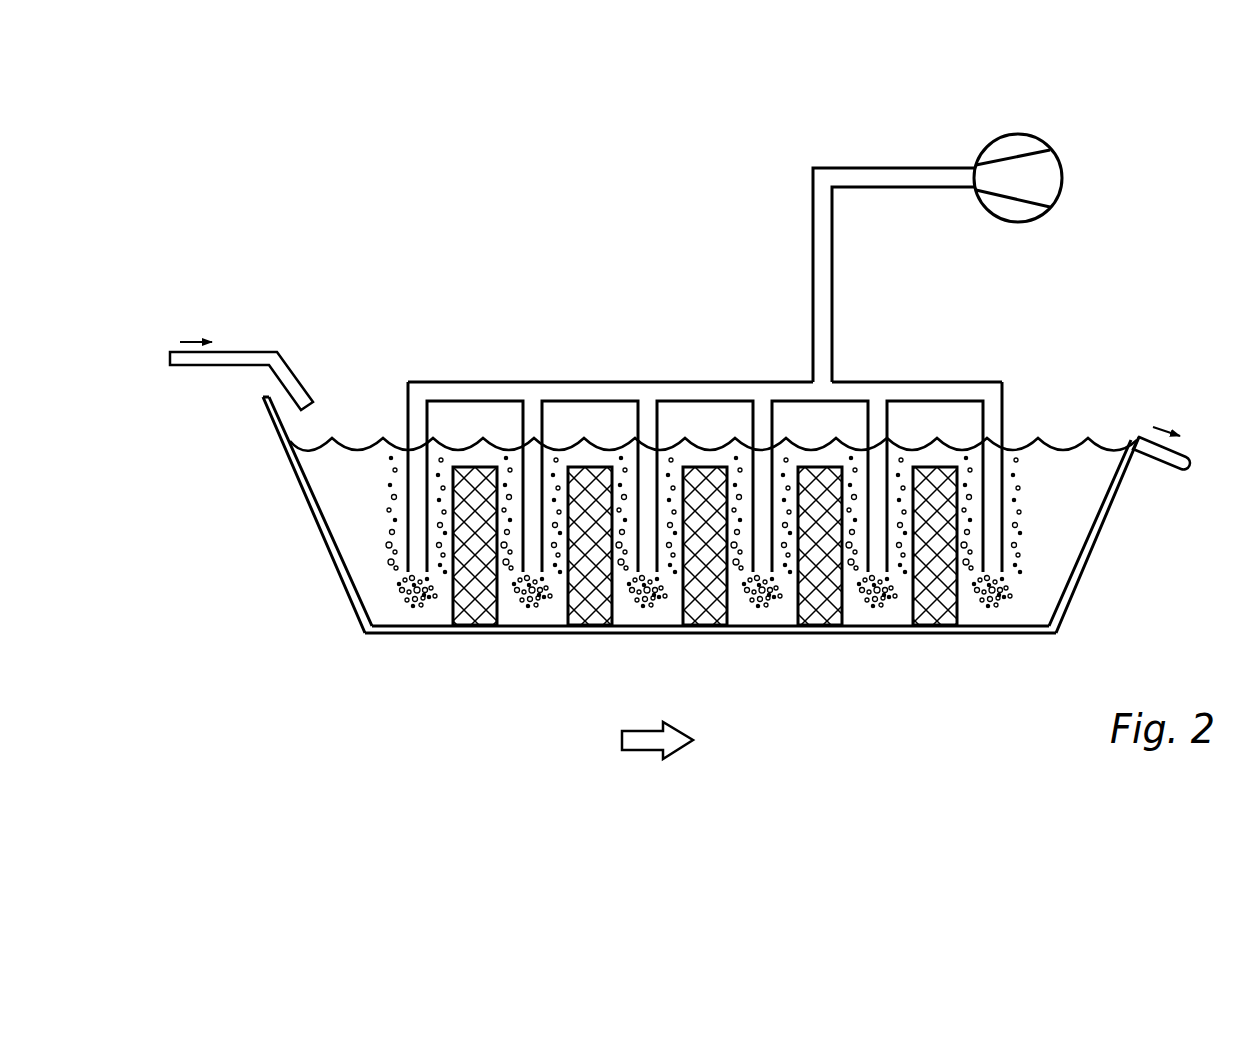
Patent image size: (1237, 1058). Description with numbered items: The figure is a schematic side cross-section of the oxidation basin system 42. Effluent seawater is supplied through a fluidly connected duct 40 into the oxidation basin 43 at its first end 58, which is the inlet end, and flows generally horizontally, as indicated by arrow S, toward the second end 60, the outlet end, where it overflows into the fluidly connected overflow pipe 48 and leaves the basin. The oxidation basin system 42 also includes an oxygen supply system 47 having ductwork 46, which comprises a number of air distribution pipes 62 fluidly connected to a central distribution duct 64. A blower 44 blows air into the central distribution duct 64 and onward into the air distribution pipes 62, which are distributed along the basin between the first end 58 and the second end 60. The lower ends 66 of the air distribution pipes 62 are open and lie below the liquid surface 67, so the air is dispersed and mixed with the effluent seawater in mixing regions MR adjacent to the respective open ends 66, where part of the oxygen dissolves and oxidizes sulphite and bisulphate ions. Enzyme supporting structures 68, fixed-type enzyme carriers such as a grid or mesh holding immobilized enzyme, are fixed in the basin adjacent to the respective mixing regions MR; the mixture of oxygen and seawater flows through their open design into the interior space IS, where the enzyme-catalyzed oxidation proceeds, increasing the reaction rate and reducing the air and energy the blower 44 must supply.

The duct 40 is at (210, 365).
The oxidation basin system 42 is at (546, 222).
The oxidation basin 43 is at (437, 633).
The blower 44 is at (1062, 168).
The ductwork 46 is at (716, 371).
The oxygen supply system 47 is at (804, 229).
The overflow pipe 48 is at (1157, 455).
The first end 58 is at (300, 487).
The second end 60 is at (1100, 537).
The air distribution pipes 62 is at (407, 415).
The central distribution duct 64 is at (505, 386).
The lower ends 66 is at (417, 597).
The liquid surface 67 is at (1087, 445).
The enzyme supporting structure 68 is at (473, 612).
The interior space IS is at (590, 507).
The mixing regions MR is at (892, 598).
The arrow S is at (652, 731).